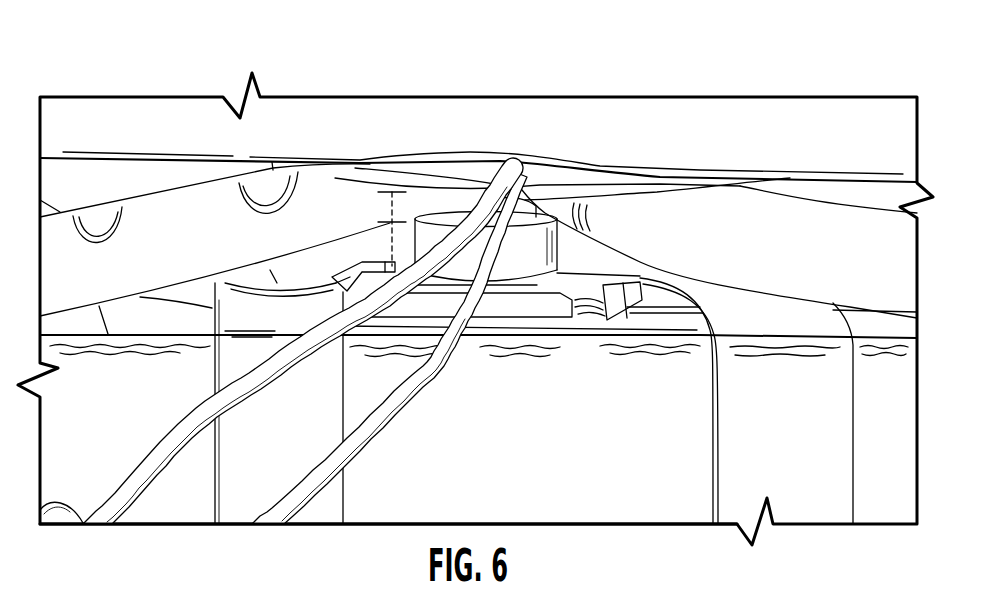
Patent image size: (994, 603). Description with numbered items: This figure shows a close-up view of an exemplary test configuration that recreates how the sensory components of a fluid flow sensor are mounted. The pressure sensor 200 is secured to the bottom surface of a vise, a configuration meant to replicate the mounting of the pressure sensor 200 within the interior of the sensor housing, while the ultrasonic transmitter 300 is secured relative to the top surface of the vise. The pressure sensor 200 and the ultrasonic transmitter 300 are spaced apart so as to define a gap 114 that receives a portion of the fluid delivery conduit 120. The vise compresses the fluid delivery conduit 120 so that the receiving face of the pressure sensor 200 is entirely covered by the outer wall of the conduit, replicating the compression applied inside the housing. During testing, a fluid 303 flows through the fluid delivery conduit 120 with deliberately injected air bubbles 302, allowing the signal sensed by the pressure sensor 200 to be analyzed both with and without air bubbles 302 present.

The gap 114 is at (393, 199).
The fluid delivery conduit 120 is at (901, 214).
The pressure sensor 200 is at (407, 242).
The ultrasonic transmitter 300 is at (662, 191).
The air bubbles 302 is at (271, 194).
The fluid 303 is at (328, 194).